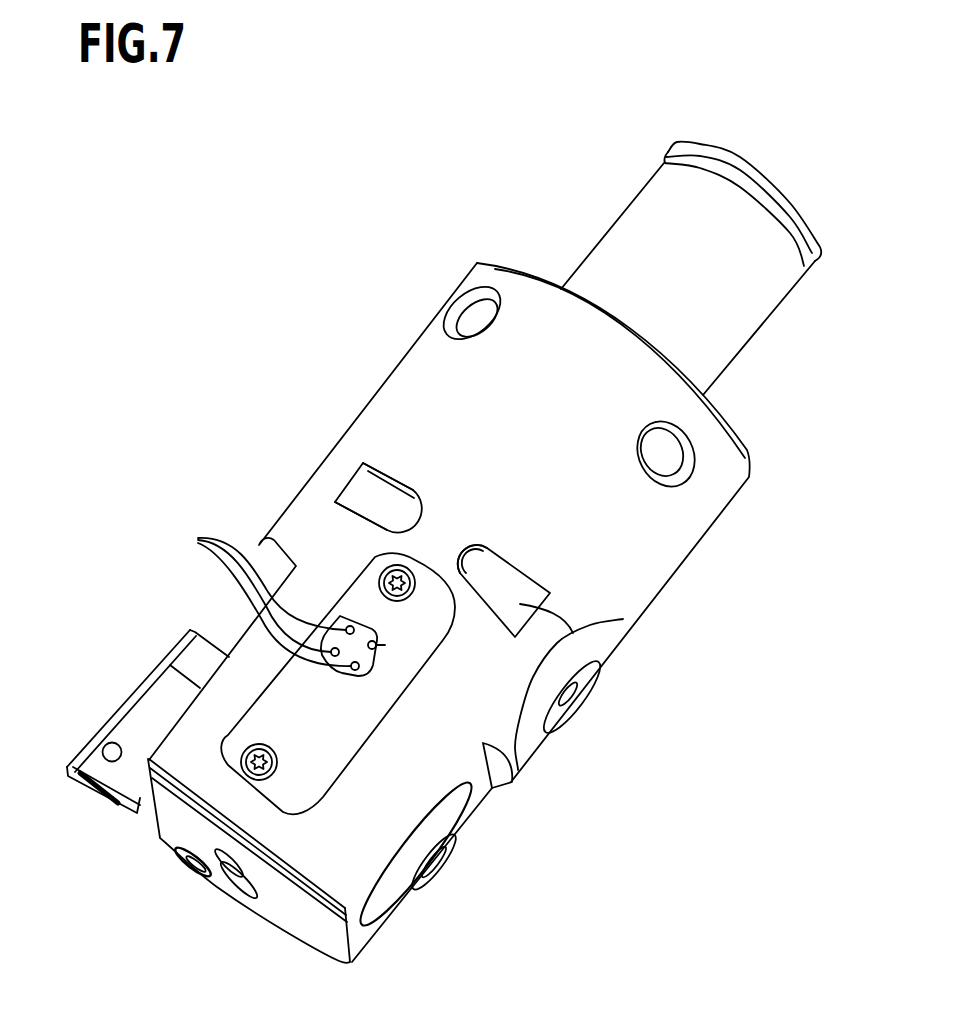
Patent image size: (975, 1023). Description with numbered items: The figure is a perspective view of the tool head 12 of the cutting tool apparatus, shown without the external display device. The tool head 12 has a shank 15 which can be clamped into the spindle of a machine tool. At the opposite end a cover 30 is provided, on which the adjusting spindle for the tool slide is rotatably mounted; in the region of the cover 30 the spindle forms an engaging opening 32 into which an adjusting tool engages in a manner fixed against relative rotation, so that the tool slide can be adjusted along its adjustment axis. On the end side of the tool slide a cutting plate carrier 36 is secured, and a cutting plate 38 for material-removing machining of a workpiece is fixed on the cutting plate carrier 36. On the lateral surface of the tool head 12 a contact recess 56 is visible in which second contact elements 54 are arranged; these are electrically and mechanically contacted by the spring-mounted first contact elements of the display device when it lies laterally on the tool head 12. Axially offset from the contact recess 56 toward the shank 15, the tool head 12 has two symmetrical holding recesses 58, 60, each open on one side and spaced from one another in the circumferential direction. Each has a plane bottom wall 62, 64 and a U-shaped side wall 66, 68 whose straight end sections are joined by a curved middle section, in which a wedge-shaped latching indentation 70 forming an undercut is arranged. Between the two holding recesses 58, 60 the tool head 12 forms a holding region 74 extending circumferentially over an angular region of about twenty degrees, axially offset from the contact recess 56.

The tool head 12 is at (498, 238).
The shank 15 is at (627, 237).
The cover 30 is at (395, 902).
The engaging opening 32 is at (442, 870).
The cutting plate carrier 36 is at (95, 753).
The cutting plate 38 is at (88, 785).
The second contact elements 54 is at (251, 594).
The contact recess 56 is at (390, 640).
The holding recess 58 is at (537, 588).
The holding recess 60 is at (343, 496).
The bottom wall 62 is at (597, 666).
The bottom wall 64 is at (362, 460).
The side wall 66 is at (520, 565).
The side wall 68 is at (366, 490).
The latching indentation 70 is at (482, 546).
The holding region 74 is at (438, 533).